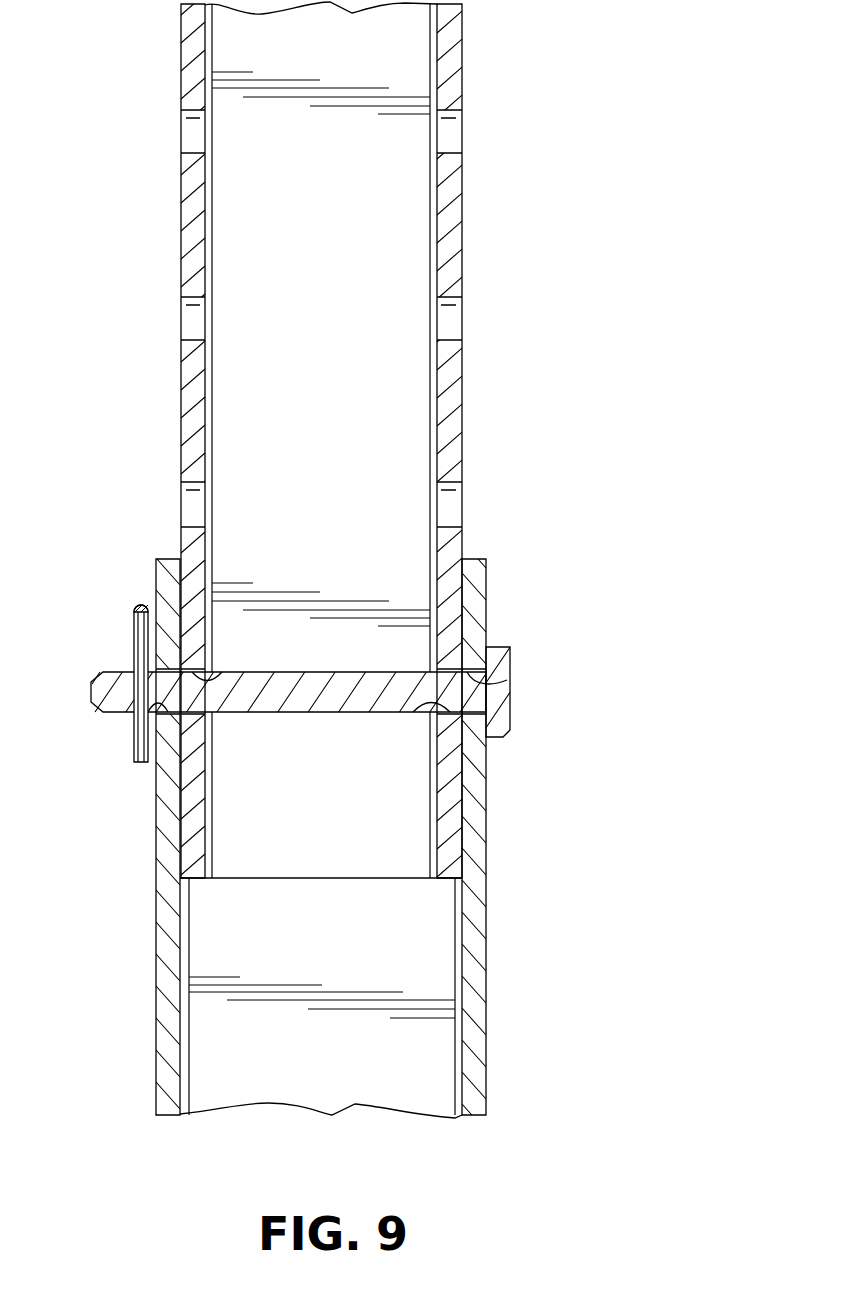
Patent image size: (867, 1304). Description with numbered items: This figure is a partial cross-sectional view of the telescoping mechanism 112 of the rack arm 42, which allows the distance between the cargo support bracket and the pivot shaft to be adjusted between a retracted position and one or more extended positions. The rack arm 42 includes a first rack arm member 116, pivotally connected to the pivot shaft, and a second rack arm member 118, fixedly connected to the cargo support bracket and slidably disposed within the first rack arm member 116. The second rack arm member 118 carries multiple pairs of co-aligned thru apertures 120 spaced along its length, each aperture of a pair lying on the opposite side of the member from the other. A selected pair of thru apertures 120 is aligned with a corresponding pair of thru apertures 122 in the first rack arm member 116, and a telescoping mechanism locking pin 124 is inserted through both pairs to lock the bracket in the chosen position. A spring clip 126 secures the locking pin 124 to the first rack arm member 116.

The telescoping mechanism 112 is at (598, 570).
The rack arm 42 is at (489, 927).
The first rack arm member 116 is at (157, 1002).
The second rack arm member 118 is at (463, 221).
The thru apertures 120 is at (193, 153).
The thru apertures 122 is at (507, 680).
The telescoping mechanism locking pin 124 is at (510, 705).
The spring clip 126 is at (134, 631).